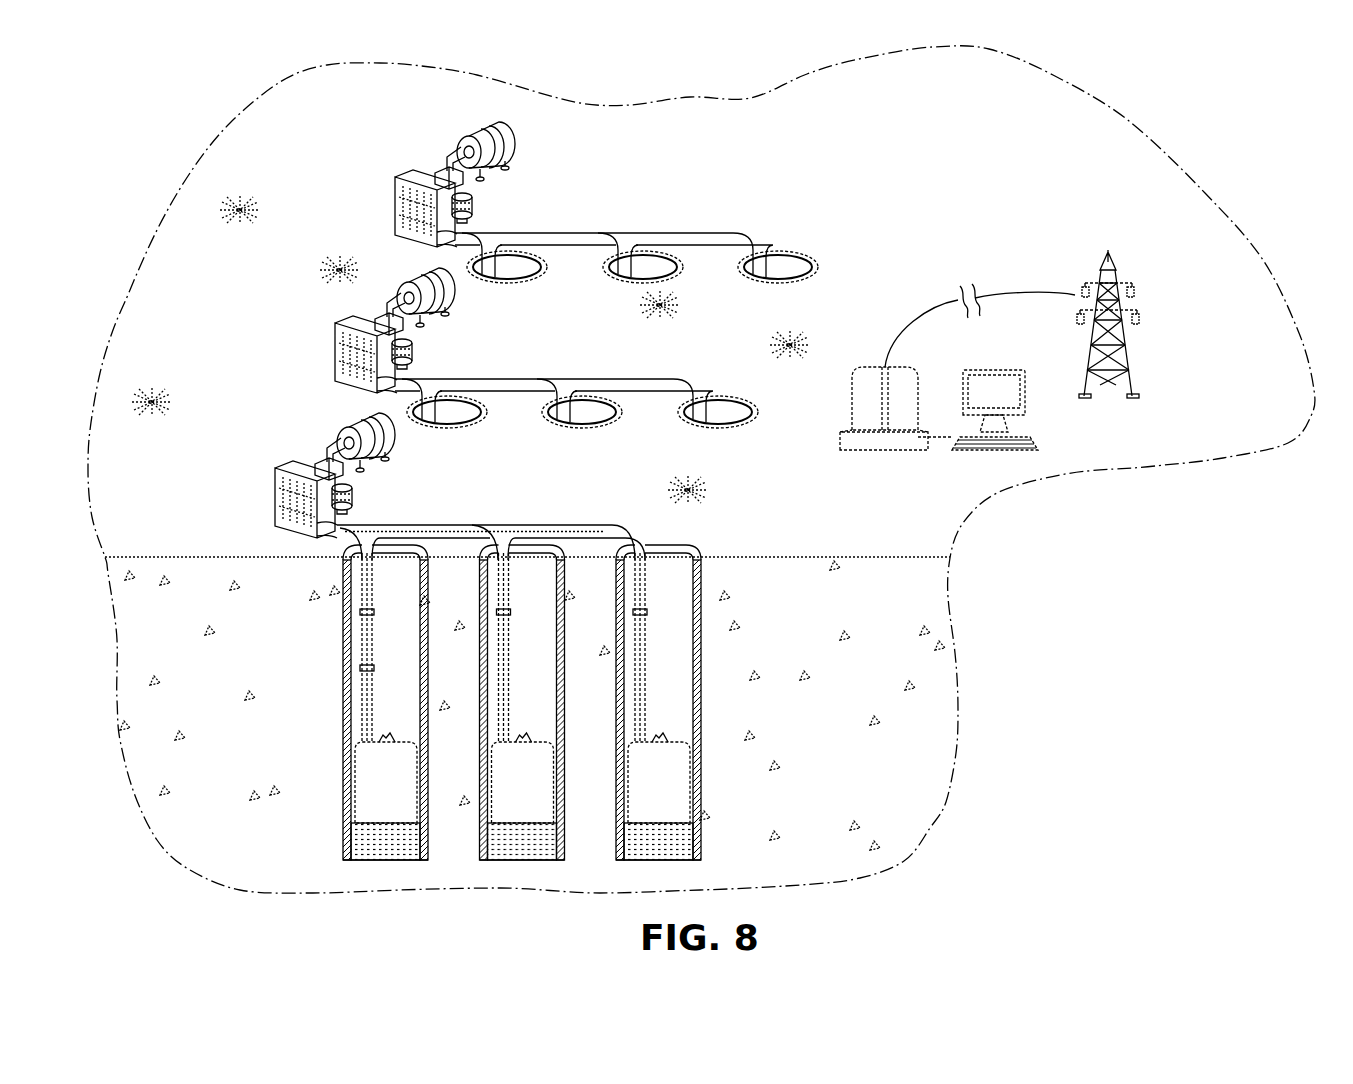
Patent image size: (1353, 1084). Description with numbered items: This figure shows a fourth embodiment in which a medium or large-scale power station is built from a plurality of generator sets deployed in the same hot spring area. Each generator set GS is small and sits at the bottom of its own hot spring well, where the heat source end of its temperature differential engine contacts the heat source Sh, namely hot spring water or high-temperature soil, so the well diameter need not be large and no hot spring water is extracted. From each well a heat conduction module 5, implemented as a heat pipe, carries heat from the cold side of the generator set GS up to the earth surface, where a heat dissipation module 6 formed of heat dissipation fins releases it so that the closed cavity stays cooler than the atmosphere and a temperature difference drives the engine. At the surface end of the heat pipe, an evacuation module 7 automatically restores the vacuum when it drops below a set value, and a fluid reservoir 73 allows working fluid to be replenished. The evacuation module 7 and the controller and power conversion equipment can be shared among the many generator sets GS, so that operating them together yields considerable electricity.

The heat conduction module 5 is at (350, 702).
The heat dissipation module 6 is at (263, 497).
The evacuation module 7 is at (337, 418).
The fluid reservoir 73 is at (356, 495).
The generator set GS is at (353, 744).
The heat source Sh is at (347, 851).